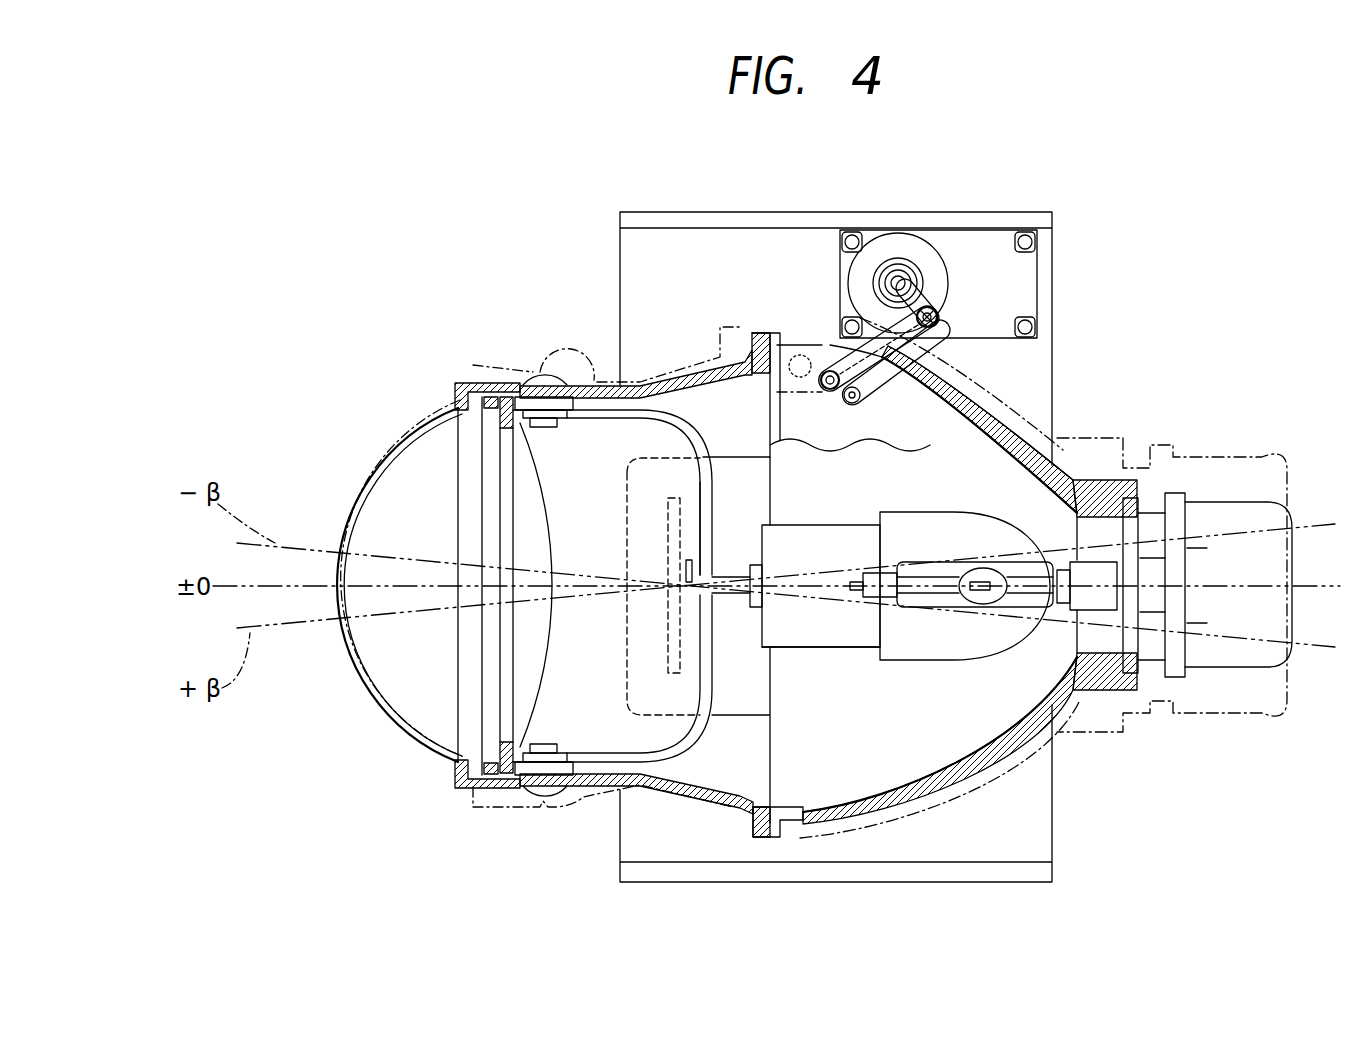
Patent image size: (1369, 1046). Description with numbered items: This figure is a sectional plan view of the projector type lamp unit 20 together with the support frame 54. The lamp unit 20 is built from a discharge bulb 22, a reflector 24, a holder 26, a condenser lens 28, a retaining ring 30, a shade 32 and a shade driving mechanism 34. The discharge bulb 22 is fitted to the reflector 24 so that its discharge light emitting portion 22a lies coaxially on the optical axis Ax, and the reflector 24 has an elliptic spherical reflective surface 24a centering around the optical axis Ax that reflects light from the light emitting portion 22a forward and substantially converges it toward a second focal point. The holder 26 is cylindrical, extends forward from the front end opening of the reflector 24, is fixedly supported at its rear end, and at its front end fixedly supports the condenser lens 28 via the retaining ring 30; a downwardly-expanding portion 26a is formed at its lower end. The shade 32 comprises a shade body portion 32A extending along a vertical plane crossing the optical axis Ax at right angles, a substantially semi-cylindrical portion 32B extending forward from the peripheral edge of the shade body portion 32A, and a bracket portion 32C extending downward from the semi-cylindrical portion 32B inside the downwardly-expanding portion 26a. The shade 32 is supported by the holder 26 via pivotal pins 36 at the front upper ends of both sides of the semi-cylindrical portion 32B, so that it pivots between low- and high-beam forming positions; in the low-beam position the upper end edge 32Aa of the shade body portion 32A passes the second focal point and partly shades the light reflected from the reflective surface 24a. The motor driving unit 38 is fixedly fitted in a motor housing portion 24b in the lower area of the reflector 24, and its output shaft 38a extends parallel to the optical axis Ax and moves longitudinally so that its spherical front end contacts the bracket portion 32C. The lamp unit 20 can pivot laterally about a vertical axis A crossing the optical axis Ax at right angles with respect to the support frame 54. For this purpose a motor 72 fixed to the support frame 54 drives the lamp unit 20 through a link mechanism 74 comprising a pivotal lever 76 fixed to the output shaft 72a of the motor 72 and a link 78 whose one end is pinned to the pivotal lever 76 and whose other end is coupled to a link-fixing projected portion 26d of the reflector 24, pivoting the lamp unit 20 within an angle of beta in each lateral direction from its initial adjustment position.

The lamp unit 20 is at (332, 337).
The discharge bulb 22 is at (944, 555).
The discharge light emitting portion 22a is at (980, 593).
The reflector 24 is at (1010, 421).
The reflective surface 24a is at (1013, 460).
The motor housing portion 24b is at (815, 647).
The holder 26 is at (594, 381).
The downwardly-expanding portion 26a is at (722, 462).
The link-fixing projected portion 26d is at (794, 346).
The condenser lens 28 is at (384, 448).
The retaining ring 30 is at (452, 380).
The shade 32 is at (672, 417).
The shade body portion 32A is at (687, 637).
The upper end edge 32Aa is at (700, 541).
The substantially semi-cylindrical portion 32B is at (567, 613).
The bracket portion 32C is at (655, 553).
The shade driving mechanism 34 is at (800, 671).
The pivotal pin 36 is at (549, 430).
The motor driving unit 38 is at (823, 525).
The output shaft 38a is at (722, 606).
The support frame 54 is at (616, 282).
The motor 72 is at (915, 248).
The output shaft of the motor 72a is at (897, 280).
The link mechanism 74 is at (970, 308).
The pivotal lever 76 is at (935, 286).
The link 78 is at (925, 348).
The vertical axis A is at (683, 600).
The optical axis Ax is at (306, 592).